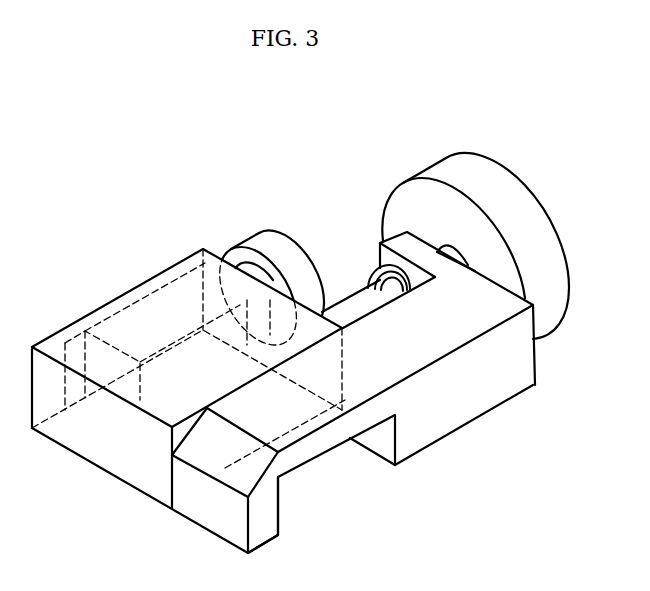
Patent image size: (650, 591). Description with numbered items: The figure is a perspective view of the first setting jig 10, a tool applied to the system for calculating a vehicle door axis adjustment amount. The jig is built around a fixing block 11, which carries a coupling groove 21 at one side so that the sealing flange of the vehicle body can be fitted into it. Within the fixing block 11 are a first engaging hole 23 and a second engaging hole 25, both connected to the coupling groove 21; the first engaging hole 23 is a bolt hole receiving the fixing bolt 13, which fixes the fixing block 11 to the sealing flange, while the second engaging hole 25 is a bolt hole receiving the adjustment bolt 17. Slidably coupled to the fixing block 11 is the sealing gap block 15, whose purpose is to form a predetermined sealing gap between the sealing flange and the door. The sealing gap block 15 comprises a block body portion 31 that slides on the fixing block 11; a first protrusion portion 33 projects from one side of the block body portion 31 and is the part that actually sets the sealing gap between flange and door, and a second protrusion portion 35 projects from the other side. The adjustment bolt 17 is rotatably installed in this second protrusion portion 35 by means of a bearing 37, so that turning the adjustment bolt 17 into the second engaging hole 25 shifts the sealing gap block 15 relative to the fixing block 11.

The first setting jig 10 is at (217, 177).
The fixing block 11 is at (142, 283).
The fixing bolt 13 is at (276, 233).
The sealing gap block 15 is at (422, 462).
The adjustment bolt 17 is at (481, 165).
The coupling groove 21 is at (78, 348).
The first engaging hole 23 is at (184, 300).
The second engaging hole 25 is at (293, 410).
The block body portion 31 is at (445, 345).
The first protrusion portion 33 is at (272, 505).
The second protrusion portion 35 is at (397, 247).
The bearing 37 is at (383, 262).